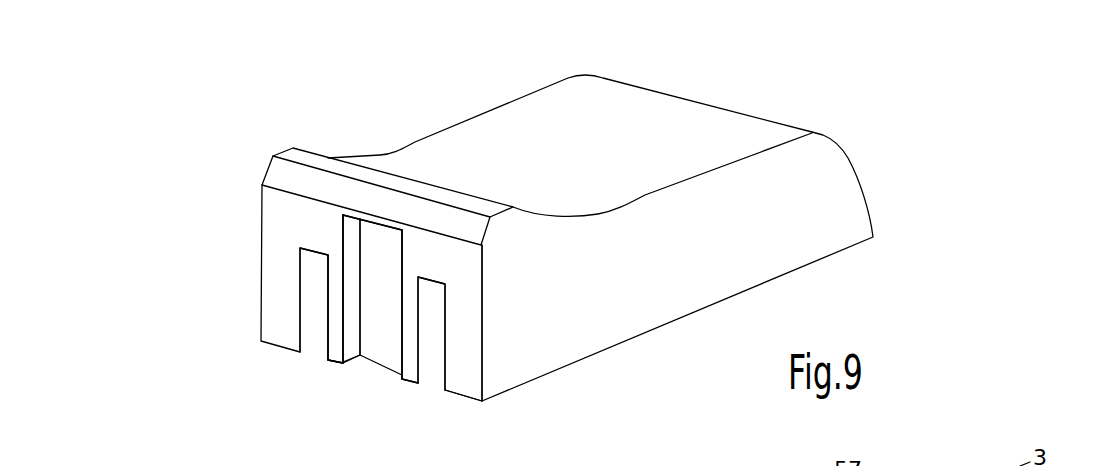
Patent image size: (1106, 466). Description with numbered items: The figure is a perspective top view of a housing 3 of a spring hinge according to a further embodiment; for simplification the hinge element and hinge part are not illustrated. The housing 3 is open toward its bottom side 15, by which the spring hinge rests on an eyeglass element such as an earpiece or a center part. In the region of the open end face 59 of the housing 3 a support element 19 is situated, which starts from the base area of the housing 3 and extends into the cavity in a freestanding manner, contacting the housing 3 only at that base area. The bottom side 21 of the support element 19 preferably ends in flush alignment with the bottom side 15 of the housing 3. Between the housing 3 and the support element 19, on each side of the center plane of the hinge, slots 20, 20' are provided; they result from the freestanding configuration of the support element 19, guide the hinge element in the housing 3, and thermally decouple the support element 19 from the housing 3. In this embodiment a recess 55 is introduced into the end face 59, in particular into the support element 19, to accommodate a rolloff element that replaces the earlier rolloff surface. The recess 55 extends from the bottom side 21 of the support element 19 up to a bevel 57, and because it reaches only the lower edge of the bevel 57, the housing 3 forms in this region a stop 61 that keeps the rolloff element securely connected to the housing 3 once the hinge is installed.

The housing 3 is at (833, 97).
The bottom side 15 is at (728, 298).
The support element 19 is at (337, 288).
The slot 20 is at (492, 366).
The slot 20' is at (223, 308).
The bottom side of the support element 21 is at (355, 371).
The recess 55 is at (382, 342).
The bevel 57 is at (304, 187).
The end face 59 is at (433, 252).
The stop 61 is at (372, 221).